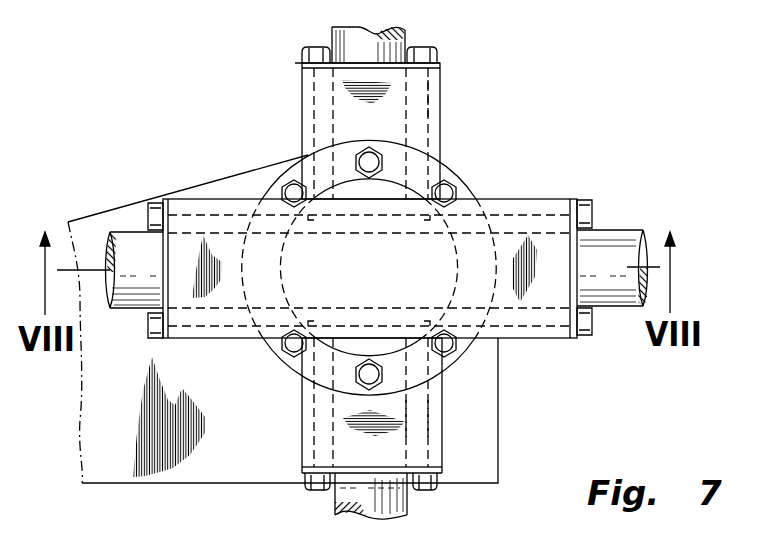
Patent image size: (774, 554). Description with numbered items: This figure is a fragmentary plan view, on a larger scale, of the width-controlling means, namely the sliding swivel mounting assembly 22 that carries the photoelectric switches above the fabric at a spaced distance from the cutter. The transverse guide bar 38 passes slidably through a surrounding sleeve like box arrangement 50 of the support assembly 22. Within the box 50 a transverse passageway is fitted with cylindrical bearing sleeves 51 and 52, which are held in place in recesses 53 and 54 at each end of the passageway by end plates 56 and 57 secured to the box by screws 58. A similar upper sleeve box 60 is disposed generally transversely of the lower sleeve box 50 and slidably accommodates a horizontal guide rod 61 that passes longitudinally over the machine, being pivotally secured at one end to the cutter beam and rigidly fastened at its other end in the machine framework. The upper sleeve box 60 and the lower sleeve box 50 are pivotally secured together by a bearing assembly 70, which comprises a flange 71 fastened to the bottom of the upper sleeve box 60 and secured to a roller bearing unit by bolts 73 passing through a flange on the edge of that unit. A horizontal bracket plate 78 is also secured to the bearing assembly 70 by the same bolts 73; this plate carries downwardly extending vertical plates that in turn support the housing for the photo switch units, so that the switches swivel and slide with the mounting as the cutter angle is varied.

The sliding swivel mounting assembly 22 is at (289, 384).
The transverse guide bar 38 is at (385, 510).
The sleeve like box arrangement 50 is at (308, 438).
The cylindrical bearing sleeve 51 is at (428, 435).
The cylindrical bearing sleeve 52 is at (412, 82).
The recess 53 is at (430, 412).
The recess 54 is at (430, 100).
The end plate 56 is at (305, 472).
The end plate 57 is at (302, 64).
The screws 58 is at (425, 488).
The upper sleeve box 60 is at (528, 203).
The horizontal guide rod 61 is at (614, 247).
The bearing assembly 70 is at (468, 179).
The flange 71 is at (455, 348).
The bolts 73 is at (284, 343).
The horizontal bracket plate 78 is at (107, 480).